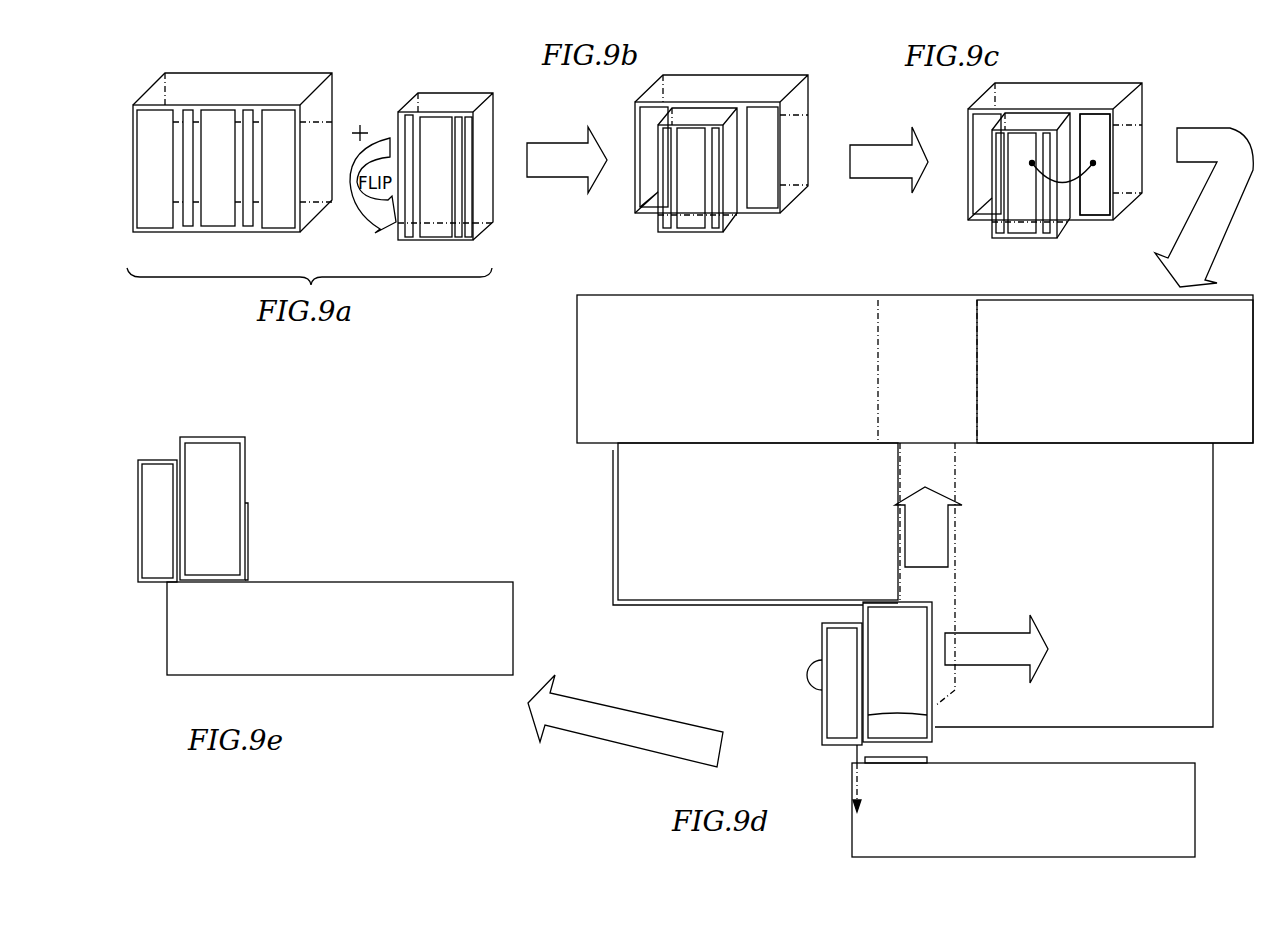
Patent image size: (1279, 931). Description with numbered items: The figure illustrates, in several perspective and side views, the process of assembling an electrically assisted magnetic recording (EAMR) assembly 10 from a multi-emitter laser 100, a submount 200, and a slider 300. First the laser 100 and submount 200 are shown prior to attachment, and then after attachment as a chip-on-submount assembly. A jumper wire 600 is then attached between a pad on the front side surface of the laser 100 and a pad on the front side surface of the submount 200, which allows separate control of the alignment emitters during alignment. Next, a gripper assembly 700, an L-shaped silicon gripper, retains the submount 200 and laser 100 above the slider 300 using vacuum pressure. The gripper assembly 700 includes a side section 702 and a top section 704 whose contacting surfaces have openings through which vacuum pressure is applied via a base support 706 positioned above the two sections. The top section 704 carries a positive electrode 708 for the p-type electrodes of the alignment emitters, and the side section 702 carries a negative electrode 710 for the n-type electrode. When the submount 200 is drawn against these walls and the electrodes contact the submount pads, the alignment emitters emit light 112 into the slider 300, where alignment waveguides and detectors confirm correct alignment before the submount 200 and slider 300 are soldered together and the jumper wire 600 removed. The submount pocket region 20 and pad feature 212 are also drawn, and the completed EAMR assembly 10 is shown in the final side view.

In FIG. 9E, the electrically assisted magnetic recording (EAMR) assembly 10 is at (337, 452).
In FIG. 9D, the submount holder / pocket 20 is at (932, 738).
In FIG. 9A, the multi-emitter laser 100 is at (440, 95).
In FIG. 9B, the multi-emitter laser 100 is at (658, 220).
In FIG. 9C, the multi-emitter laser 100 is at (990, 228).
In FIG. 9D, the multi-emitter laser 100 is at (822, 732).
In FIG. 9E, the multi-emitter laser 100 is at (163, 459).
In FIG. 9D, the light 112 is at (855, 755).
In FIG. 9A, the submount 200 is at (250, 73).
In FIG. 9B, the submount 200 is at (713, 74).
In FIG. 9C, the submount 200 is at (1050, 82).
In FIG. 9E, the submount 200 is at (225, 437).
In FIG. 9C, the submount bonding pad 212 is at (1095, 140).
In FIG. 9D, the slider 300 is at (1044, 836).
In FIG. 9E, the slider 300 is at (397, 635).
In FIG. 9C, the jumper wire 600 is at (1086, 192).
In FIG. 9D, the jumper wire 600 is at (820, 673).
In FIG. 9D, the gripper assembly 700 is at (547, 400).
In FIG. 9D, the side section 702 is at (1100, 569).
In FIG. 9D, the top section 704 is at (780, 546).
In FIG. 9D, the base support 706 is at (1128, 377).
In FIG. 9D, the positive electrode 708 is at (800, 604).
In FIG. 9D, the negative electrode 710 is at (927, 715).